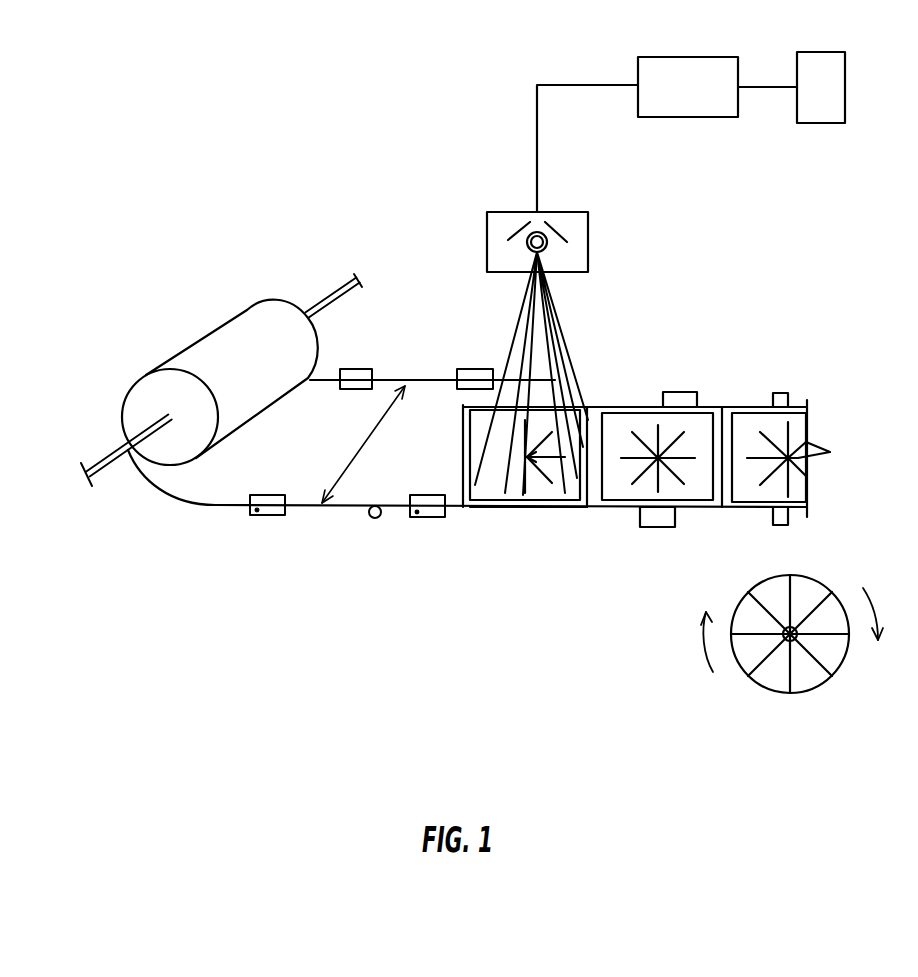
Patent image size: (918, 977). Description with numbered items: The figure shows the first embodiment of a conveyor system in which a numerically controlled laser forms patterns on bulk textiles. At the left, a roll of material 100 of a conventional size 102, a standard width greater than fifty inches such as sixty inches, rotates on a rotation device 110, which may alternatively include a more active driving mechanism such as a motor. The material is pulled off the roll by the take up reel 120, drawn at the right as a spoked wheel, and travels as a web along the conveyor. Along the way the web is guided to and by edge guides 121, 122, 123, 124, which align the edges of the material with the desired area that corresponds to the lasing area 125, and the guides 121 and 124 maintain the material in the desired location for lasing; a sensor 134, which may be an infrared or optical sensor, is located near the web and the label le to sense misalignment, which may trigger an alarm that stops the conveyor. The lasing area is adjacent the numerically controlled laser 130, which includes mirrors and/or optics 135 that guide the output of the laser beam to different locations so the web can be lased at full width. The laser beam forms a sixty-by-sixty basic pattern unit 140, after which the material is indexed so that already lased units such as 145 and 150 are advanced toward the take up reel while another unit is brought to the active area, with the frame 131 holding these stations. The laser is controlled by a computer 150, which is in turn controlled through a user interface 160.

The roll of material 100 is at (133, 392).
The rotation device 110 is at (97, 457).
The size of conventional width 102 is at (363, 440).
The take up reel 120 is at (790, 693).
The edge guide 121 is at (260, 517).
The edge guide 122 is at (345, 368).
The edge guide 123 is at (433, 517).
The edge guide 124 is at (480, 370).
The lasing area 125 is at (547, 507).
The laser 130 is at (508, 217).
The frame 131 is at (583, 405).
The sensor 134 is at (387, 512).
The mirrors and/or optics 135 is at (557, 232).
The basic pattern unit 140 is at (547, 372).
The lased unit 145 is at (623, 418).
The computer 150 is at (723, 57).
The user interface 160 is at (822, 52).
The leading edge le is at (370, 518).